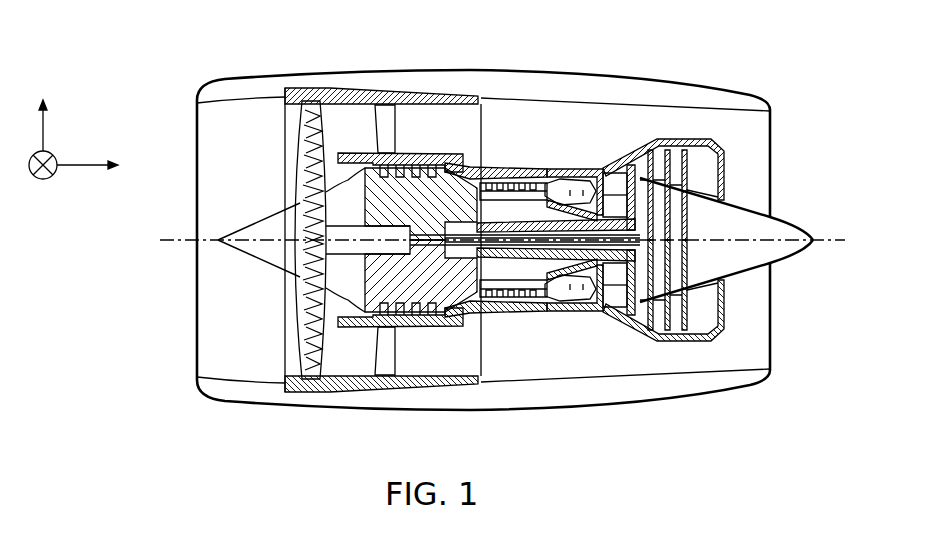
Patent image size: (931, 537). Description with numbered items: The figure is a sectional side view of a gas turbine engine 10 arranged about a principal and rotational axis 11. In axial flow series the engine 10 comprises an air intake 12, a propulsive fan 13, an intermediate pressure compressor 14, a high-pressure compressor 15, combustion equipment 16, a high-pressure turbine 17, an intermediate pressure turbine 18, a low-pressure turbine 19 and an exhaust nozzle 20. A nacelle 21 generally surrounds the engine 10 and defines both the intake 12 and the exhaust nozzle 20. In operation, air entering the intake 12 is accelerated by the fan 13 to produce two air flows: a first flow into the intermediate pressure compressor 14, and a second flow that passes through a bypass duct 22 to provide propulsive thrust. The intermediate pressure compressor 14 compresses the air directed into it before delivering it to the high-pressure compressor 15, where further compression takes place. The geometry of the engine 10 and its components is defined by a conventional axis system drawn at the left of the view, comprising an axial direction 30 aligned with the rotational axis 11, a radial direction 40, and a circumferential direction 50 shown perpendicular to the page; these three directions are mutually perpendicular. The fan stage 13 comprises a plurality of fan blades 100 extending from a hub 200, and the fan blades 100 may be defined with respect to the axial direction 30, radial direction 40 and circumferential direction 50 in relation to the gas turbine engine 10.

The gas turbine engine 10 is at (173, 134).
The principal and rotational axis 11 is at (208, 240).
The air intake 12 is at (252, 98).
The propulsive fan 13 is at (303, 333).
The intermediate pressure compressor 14 is at (428, 323).
The high-pressure compressor 15 is at (510, 180).
The combustion equipment 16 is at (553, 305).
The high-pressure turbine 17 is at (600, 307).
The intermediate pressure turbine 18 is at (627, 163).
The low-pressure turbine 19 is at (641, 329).
The exhaust nozzle 20 is at (772, 347).
The nacelle 21 is at (617, 74).
The bypass duct 22 is at (451, 140).
The axial direction 30 is at (91, 179).
The radial direction 40 is at (43, 112).
The circumferential direction 50 is at (36, 179).
The fan blade 100 is at (300, 280).
The hub 200 is at (300, 263).